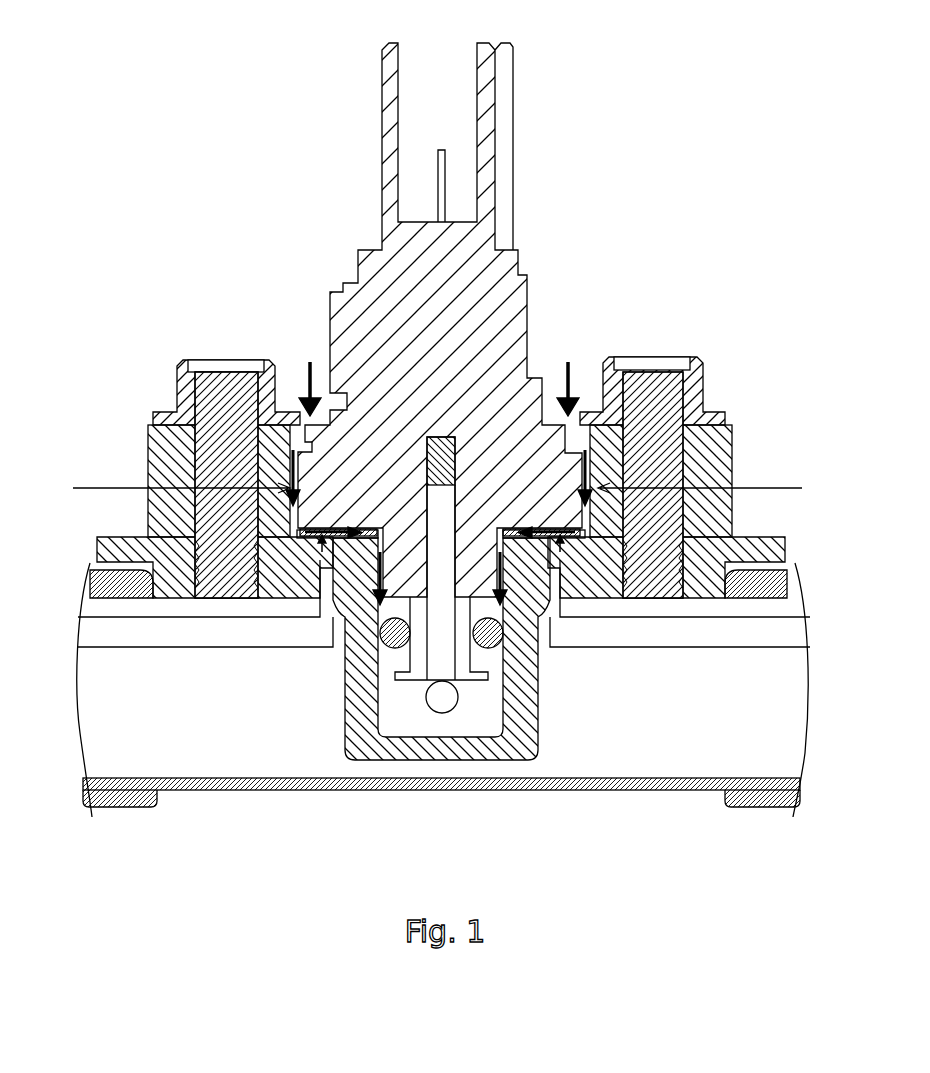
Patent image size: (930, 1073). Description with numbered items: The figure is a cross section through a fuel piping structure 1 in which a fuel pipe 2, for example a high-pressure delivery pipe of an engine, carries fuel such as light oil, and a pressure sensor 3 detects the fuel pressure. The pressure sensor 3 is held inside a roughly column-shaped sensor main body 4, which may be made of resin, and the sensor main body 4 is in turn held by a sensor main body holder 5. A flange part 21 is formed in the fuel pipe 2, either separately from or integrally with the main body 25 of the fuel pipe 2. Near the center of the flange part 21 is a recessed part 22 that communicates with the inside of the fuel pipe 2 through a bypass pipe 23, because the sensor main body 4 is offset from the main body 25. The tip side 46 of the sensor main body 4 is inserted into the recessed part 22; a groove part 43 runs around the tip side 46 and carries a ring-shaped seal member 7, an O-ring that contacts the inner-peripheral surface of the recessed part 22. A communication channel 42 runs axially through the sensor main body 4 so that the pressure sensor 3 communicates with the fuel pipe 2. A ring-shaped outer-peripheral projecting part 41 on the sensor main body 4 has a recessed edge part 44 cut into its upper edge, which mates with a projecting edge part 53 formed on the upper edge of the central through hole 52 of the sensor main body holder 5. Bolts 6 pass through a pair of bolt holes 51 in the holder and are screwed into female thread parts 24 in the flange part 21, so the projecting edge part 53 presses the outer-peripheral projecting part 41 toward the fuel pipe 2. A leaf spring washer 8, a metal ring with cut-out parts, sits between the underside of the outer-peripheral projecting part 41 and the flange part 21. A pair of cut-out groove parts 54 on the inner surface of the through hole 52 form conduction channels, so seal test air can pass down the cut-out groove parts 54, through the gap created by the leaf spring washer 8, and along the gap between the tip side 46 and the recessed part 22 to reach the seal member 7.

The fuel piping structure 1 is at (291, 82).
The fuel pipe 2 is at (193, 757).
The pressure sensor 3 is at (447, 445).
The sensor main body 4 is at (372, 268).
The sensor main body holder 5 is at (165, 445).
The bolt 6 is at (212, 385).
The seal member 7 is at (340, 655).
The leaf spring washer 8 is at (377, 527).
The flange part 21 is at (100, 551).
The recessed part 22 is at (520, 740).
The bypass pipe 23 is at (442, 705).
The female thread part 24 is at (197, 530).
The main body 25 is at (647, 800).
The outer-peripheral projecting part 41 is at (293, 537).
The communication channel 42 is at (437, 578).
The groove part 43 is at (347, 707).
The recessed edge part 44 is at (258, 372).
The tip side 46 is at (505, 637).
The bolt hole 51 is at (180, 395).
The through hole 52 is at (525, 447).
The projecting edge part 53 is at (302, 432).
The cut-out groove part 54 is at (287, 478).